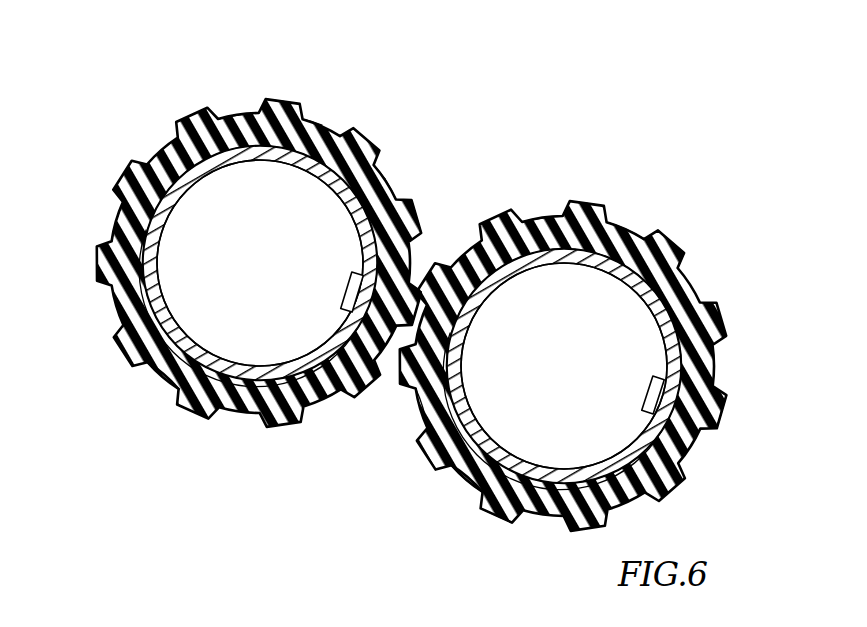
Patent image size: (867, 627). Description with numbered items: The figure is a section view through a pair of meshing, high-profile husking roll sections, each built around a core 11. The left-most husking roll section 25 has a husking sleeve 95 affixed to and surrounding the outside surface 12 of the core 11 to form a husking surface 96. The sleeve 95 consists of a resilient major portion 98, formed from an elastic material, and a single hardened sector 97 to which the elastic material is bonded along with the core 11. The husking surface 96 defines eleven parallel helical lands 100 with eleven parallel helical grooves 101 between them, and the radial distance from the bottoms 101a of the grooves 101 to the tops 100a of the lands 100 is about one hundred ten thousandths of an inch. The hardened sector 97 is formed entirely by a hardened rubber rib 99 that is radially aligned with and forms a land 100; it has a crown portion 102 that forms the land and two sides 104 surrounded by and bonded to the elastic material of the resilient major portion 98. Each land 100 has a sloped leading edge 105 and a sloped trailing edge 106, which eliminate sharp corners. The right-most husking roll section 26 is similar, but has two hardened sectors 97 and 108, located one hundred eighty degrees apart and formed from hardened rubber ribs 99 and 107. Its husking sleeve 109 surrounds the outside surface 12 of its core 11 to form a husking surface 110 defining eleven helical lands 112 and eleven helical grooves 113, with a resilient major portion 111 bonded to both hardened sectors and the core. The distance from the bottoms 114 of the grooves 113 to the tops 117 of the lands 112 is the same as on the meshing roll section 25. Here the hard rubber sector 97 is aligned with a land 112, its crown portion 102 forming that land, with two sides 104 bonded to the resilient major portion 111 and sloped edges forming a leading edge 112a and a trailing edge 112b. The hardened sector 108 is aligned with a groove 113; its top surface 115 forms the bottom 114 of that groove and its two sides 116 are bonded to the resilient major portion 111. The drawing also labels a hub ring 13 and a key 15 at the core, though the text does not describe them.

The core 11 is at (163, 233).
The outside surface 12 is at (173, 367).
The hub ring 13 is at (198, 343).
The key 15 is at (345, 288).
The husking roll section 25 is at (160, 137).
The husking roll section 26 is at (722, 374).
The husking sleeve 95 is at (367, 148).
The husking surface 96 is at (377, 142).
The hardened sector 97 is at (390, 237).
The resilient major portion 98 is at (312, 126).
The hardened rubber rib 99 is at (405, 355).
The helical land 100 is at (303, 98).
The land top 100a is at (278, 96).
The helical groove 101 is at (223, 114).
The groove bottom 101a is at (248, 108).
The crown portion 102 is at (400, 377).
The side 104 is at (395, 245).
The leading edge 105 is at (105, 235).
The trailing edge 106 is at (102, 280).
The hardened rubber rib 107 is at (430, 290).
The hardened sector 108 is at (418, 422).
The husking sleeve 109 is at (603, 204).
The husking surface 110 is at (593, 202).
The resilient major portion 111 is at (628, 228).
The helical land 112 is at (668, 235).
The leading edge 112a is at (507, 523).
The trailing edge 112b is at (467, 503).
The helical groove 113 is at (537, 212).
The groove bottom 114 is at (558, 210).
The top surface 115 is at (410, 300).
The side 116 is at (445, 315).
The land top 117 is at (675, 237).